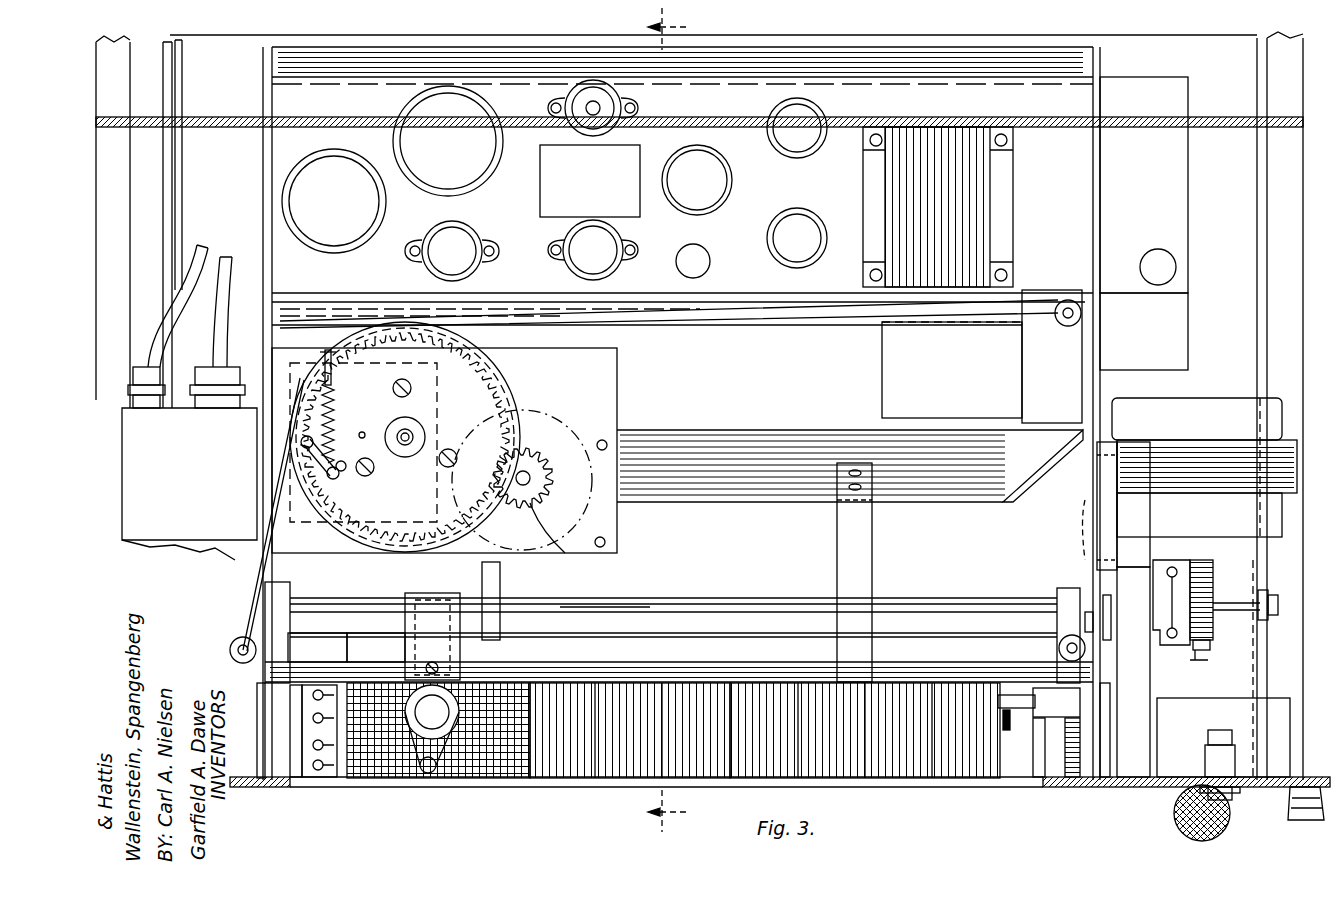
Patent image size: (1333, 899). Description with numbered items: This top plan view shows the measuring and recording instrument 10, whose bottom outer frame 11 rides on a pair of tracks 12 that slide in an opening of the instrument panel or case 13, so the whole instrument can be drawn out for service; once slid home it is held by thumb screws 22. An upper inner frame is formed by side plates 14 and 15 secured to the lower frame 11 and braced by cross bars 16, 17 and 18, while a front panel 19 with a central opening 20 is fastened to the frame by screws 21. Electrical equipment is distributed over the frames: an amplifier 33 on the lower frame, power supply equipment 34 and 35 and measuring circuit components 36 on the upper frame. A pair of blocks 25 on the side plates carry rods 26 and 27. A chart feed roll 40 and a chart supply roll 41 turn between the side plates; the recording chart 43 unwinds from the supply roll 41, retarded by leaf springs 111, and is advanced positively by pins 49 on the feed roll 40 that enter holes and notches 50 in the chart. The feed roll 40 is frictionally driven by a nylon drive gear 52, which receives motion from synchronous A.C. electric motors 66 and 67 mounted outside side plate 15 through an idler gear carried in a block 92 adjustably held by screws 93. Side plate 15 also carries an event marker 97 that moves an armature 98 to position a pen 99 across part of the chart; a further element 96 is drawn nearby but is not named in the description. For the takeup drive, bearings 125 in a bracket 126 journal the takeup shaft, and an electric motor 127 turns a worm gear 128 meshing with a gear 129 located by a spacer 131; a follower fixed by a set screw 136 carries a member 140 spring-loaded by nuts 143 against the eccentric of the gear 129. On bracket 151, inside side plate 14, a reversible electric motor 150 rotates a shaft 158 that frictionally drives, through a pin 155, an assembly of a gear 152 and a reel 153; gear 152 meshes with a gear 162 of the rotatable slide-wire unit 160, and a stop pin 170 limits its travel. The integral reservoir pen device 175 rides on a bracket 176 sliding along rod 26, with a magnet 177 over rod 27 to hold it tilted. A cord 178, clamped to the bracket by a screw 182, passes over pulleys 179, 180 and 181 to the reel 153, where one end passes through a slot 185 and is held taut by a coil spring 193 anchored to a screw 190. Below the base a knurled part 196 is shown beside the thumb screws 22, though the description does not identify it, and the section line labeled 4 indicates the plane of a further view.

The measuring and recording instrument 10 is at (117, 419).
The bottom outer frame 11 is at (170, 166).
The tracks 12 is at (122, 235).
The instrument panel or case 13 is at (203, 118).
The side plate 14 is at (262, 168).
The side plate 15 is at (1095, 200).
The cross bar 16 is at (720, 298).
The cross bar 17 is at (760, 57).
The cross bar 18 is at (1052, 470).
The front panel 19 is at (272, 789).
The central opening 20 is at (580, 790).
The screws 21 is at (245, 790).
The thumb screws 22 is at (1300, 820).
The blocks 25 is at (285, 598).
The rod 26 is at (787, 668).
The rod 27 is at (735, 633).
The amplifier 33 is at (525, 85).
The power supply equipment 34 is at (1178, 178).
The power supply equipment 35 is at (1172, 312).
The measuring circuit components 36 is at (204, 528).
The chart feed roll 40 is at (385, 780).
The chart supply roll 41 is at (615, 602).
The recording chart 43 is at (515, 772).
The pins 49 is at (328, 768).
The holes and notches 50 is at (340, 762).
The drive gear 52 is at (1068, 770).
The synchronous A.C. electric motor 66 is at (1140, 520).
The synchronous A.C. electric motor 67 is at (1151, 688).
The block 92 is at (1085, 621).
The screws 93 is at (1107, 641).
The support block 96 is at (1277, 703).
The event marker 97 is at (1070, 713).
The armature 98 is at (999, 703).
The pen 99 is at (1003, 727).
The leaf springs 111 is at (501, 583).
The bearings 125 is at (1270, 612).
The bracket 126 is at (1272, 592).
The electric motor 127 is at (1205, 410).
The worm gear 128 is at (1203, 592).
The gear 129 is at (1205, 652).
The spacer 131 is at (1235, 610).
The set screw 136 is at (1157, 642).
The member 140 is at (1192, 660).
The nuts 143 is at (1178, 602).
The reversible electric motor 150 is at (497, 377).
The bracket 151 is at (601, 400).
The gear 152 is at (520, 397).
The reel 153 is at (400, 325).
The pin 155 is at (362, 432).
The shaft 158 is at (405, 448).
The rotatable slide-wire unit 160 is at (592, 512).
The gear 162 is at (562, 556).
The pin 170 is at (343, 474).
The integral reservoir pen device 175 is at (445, 762).
The bracket 176 is at (408, 655).
The magnet 177 is at (410, 604).
The cord 178 is at (780, 306).
The pulley 179 is at (257, 650).
The pulley 180 is at (1059, 647).
The pulley 181 is at (1066, 328).
The screw 182 is at (440, 598).
The slot 185 is at (324, 357).
The screw 190 is at (325, 478).
The coil spring 193 is at (334, 410).
The adjusting knob 196 is at (1231, 812).
The section line 4- 4 is at (669, 420).